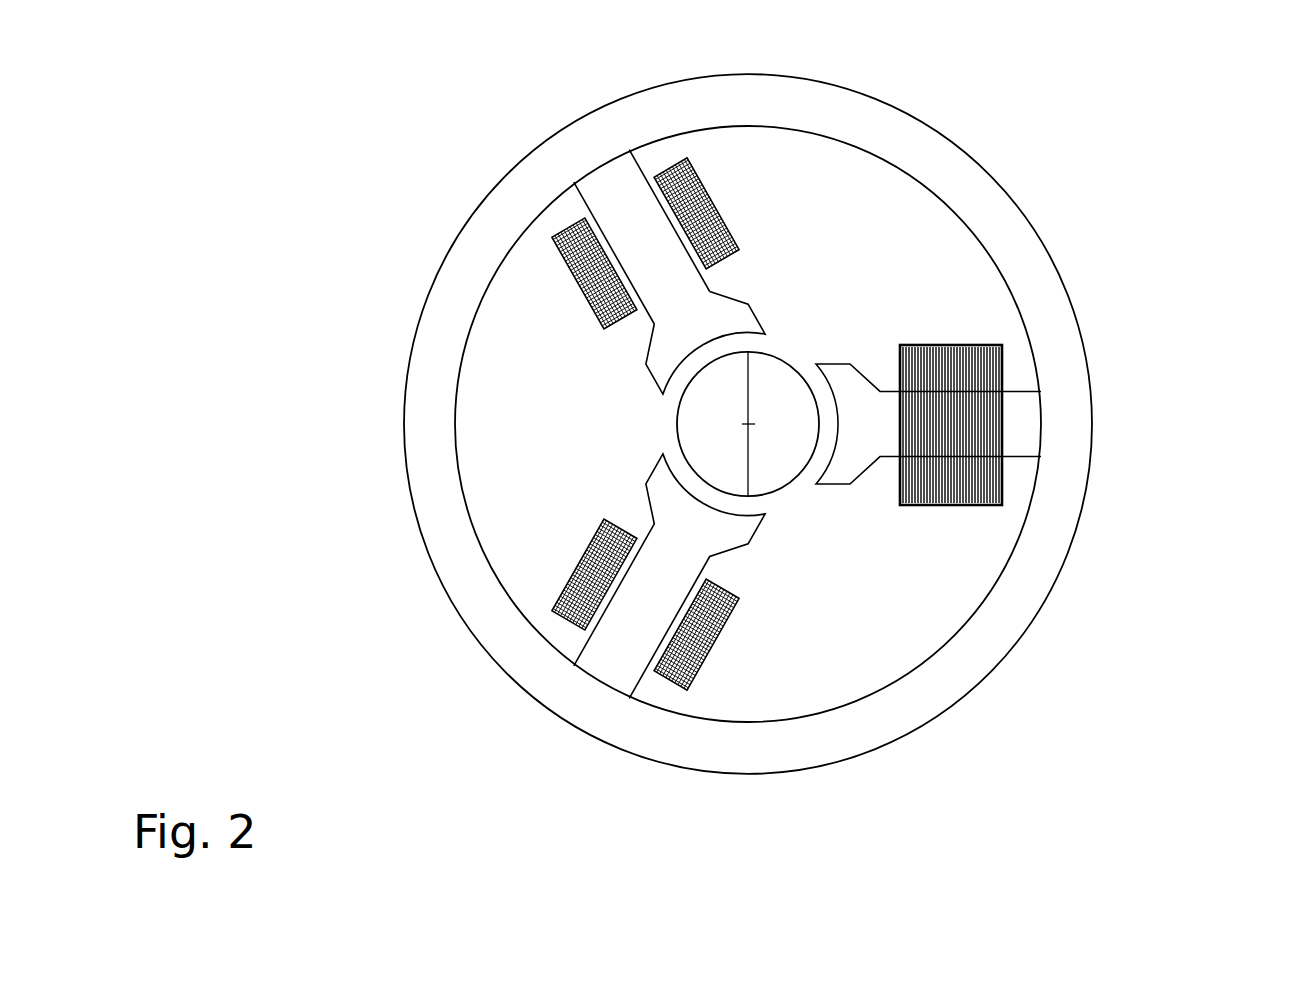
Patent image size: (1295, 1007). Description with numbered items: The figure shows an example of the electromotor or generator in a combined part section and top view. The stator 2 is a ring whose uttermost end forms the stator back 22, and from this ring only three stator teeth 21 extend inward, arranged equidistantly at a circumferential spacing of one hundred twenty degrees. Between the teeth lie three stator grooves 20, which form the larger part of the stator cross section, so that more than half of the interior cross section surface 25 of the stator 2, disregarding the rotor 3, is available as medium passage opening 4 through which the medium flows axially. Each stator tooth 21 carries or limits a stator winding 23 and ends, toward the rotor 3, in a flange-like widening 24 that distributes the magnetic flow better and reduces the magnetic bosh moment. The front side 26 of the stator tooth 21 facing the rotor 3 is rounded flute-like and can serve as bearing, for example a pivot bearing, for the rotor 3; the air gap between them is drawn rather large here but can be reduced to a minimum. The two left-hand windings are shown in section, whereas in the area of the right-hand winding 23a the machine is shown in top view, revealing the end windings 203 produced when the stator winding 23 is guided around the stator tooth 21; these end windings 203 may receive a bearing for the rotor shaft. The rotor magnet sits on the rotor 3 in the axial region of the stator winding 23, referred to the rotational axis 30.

The stator 2 is at (447, 280).
The rotor 3 is at (778, 395).
The medium passage opening 4 is at (887, 311).
The stator groove 20 is at (510, 542).
The stator tooth 21 is at (603, 190).
The stator back 22 is at (417, 448).
The stator winding 23 is at (565, 242).
The right-hand winding 23a is at (983, 370).
The flange-like widening 24 is at (718, 313).
The interior cross section surface 25 is at (642, 442).
The front side 26 is at (705, 503).
The rotational axis 30 is at (750, 424).
The end windings 203 is at (975, 430).